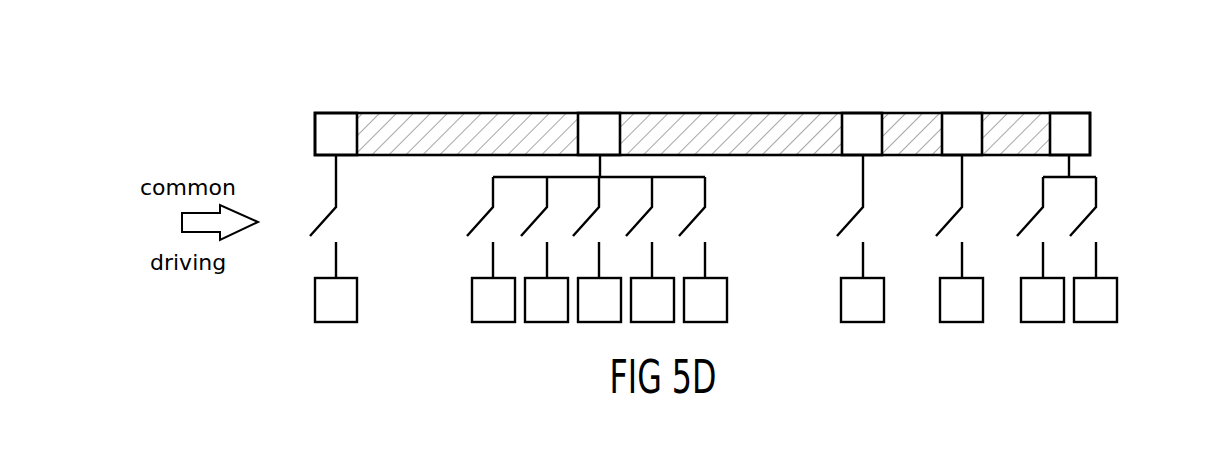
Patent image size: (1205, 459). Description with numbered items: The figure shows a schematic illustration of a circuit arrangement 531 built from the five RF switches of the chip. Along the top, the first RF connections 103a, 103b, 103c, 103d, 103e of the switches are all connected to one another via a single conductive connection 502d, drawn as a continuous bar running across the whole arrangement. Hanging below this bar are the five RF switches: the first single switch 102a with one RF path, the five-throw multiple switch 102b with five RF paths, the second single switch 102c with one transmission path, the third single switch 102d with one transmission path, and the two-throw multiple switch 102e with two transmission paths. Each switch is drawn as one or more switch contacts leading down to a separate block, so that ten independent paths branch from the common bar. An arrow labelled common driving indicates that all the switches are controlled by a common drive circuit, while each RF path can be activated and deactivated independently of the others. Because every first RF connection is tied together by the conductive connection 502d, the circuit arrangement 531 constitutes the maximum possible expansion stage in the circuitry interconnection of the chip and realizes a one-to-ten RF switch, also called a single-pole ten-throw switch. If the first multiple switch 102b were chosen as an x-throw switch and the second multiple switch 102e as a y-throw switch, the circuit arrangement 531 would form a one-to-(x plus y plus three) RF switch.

The circuit arrangement 531 is at (247, 115).
The conductive connection 502d is at (737, 130).
The first RF connection 103a is at (337, 120).
The first RF connection 103b is at (598, 120).
The first RF connection 103c is at (862, 120).
The first RF connection 103d is at (961, 120).
The first RF connection 103e is at (1069, 120).
The first single switch 102a is at (335, 193).
The 5-throw multiple switch 102b is at (600, 167).
The second single switch 102c is at (862, 178).
The third single switch 102d is at (962, 172).
The 2-throw multiple switch 102e is at (1070, 164).